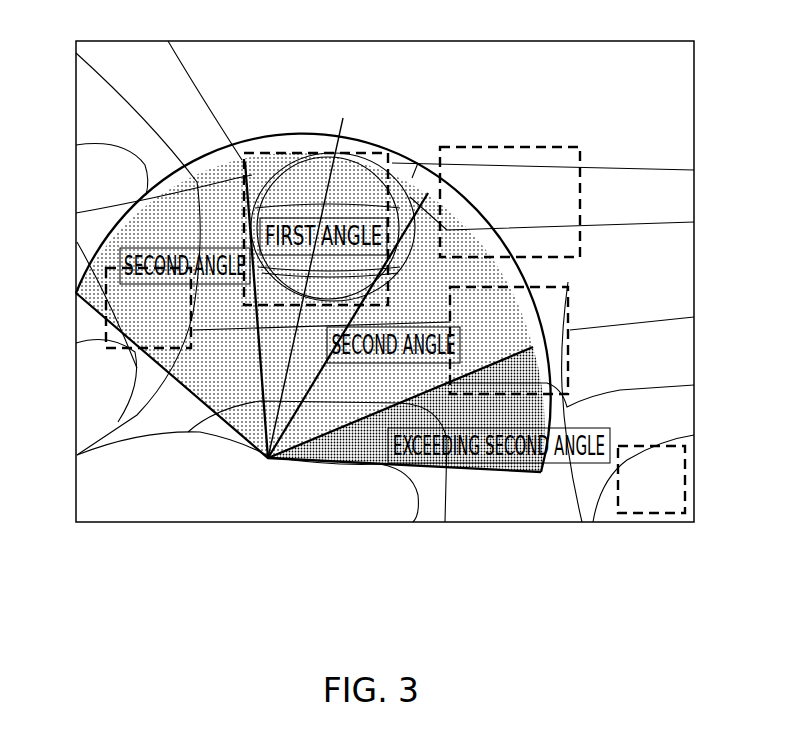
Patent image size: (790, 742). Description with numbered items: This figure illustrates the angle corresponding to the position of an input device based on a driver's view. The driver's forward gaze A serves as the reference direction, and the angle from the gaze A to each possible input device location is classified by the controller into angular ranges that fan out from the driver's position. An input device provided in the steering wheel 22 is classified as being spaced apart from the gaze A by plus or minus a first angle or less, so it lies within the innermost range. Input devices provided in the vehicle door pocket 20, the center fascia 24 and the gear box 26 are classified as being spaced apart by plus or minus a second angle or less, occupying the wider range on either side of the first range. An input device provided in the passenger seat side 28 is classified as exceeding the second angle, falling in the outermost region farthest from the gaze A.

The vehicle door pocket 20 is at (106, 337).
The steering wheel 22 is at (257, 152).
The center fascia 24 is at (500, 147).
The gear box 26 is at (569, 352).
The passenger seat side 28 is at (686, 486).
The gaze A is at (309, 274).